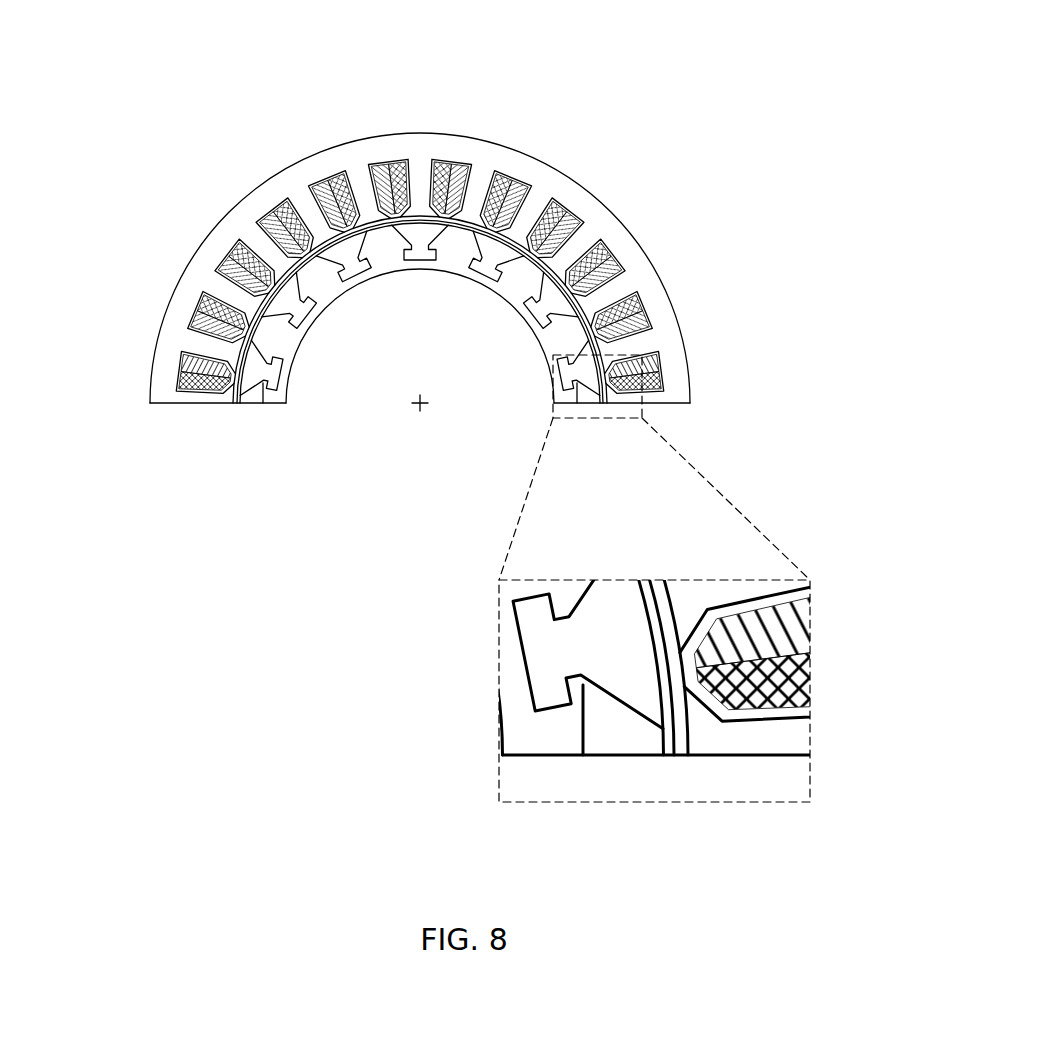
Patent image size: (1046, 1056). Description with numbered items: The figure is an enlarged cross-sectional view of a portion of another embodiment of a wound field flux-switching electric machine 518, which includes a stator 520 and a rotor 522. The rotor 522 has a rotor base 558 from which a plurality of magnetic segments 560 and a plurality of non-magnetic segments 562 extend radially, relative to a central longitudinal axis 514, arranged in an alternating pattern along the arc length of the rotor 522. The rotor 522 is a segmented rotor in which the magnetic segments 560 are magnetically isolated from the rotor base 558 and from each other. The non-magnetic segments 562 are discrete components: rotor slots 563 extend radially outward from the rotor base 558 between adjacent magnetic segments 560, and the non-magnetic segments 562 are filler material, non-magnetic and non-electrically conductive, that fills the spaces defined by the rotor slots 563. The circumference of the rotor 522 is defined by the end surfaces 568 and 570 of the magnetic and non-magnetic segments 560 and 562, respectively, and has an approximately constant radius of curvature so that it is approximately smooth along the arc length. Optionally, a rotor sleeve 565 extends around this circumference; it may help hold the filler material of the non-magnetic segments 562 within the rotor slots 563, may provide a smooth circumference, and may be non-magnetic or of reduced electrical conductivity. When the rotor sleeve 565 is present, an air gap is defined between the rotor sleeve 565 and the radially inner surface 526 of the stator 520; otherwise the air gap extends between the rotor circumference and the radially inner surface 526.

The wound field flux-switching electric machine 518 is at (636, 42).
The stator 520 is at (634, 227).
The rotor 522 is at (272, 413).
The central longitudinal axis 514 is at (410, 432).
The radially inner surface 526 is at (288, 340).
The rotor base 558 is at (443, 268).
The magnetic segments 560 is at (505, 262).
The non-magnetic segments 562 is at (471, 250).
The rotor slots 563 is at (378, 238).
The rotor sleeve 565 is at (590, 305).
The end surfaces of the magnetic segments 568 is at (560, 312).
The end surfaces of the non-magnetic segments 570 is at (590, 335).